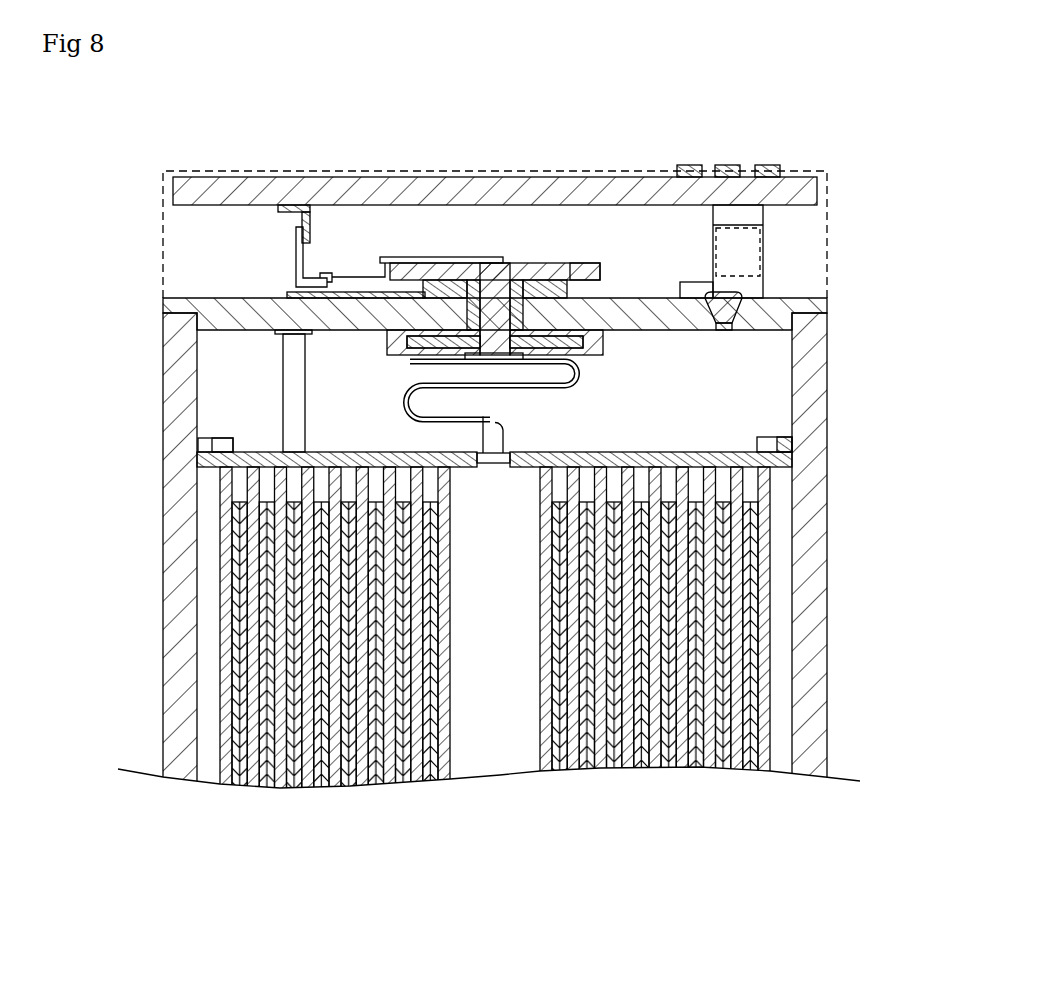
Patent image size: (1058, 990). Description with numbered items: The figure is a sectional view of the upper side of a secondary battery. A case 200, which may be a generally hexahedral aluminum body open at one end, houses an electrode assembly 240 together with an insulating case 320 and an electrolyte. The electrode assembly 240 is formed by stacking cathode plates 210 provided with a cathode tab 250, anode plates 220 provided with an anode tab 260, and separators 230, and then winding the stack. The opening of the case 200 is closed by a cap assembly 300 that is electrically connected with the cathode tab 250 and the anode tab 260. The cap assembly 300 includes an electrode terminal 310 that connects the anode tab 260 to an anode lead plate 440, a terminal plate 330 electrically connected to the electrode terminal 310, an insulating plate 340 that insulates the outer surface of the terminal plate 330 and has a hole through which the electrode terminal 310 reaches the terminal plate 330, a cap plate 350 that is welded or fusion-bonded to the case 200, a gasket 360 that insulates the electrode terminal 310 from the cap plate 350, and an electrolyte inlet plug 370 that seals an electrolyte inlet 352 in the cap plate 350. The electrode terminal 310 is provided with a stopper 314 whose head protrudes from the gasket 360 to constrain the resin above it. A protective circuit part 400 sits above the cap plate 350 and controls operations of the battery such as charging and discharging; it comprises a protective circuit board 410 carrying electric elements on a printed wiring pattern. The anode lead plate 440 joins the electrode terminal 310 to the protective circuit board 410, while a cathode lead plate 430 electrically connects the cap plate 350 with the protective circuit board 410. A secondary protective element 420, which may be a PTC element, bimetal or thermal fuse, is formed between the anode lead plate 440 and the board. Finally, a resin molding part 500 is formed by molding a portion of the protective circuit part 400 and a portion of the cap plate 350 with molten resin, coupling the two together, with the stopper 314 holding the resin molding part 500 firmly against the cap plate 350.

The case 200 is at (818, 640).
The cathode plates 210 is at (723, 770).
The anode plates 220 is at (748, 763).
The separators 230 is at (766, 774).
The electrode assembly 240 is at (564, 671).
The cathode tab 250 is at (290, 388).
The anode tab 260 is at (408, 402).
The cap assembly 300 is at (612, 295).
The electrode terminal 310 is at (533, 268).
The stopper 314 is at (603, 270).
The insulating case 320 is at (735, 452).
The terminal plate 330 is at (580, 358).
The insulating plate 340 is at (387, 340).
The cap plate 350 is at (195, 303).
The electrolyte inlet 352 is at (722, 326).
The gasket 360 is at (565, 290).
The electrolyte inlet plug 370 is at (712, 292).
The protective circuit part 400 is at (472, 200).
The protective circuit board 410 is at (232, 190).
The secondary protective element 420 is at (330, 277).
The cathode lead plate 430 is at (757, 288).
The anode lead plate 440 is at (296, 205).
The resin molding part 500 is at (827, 268).